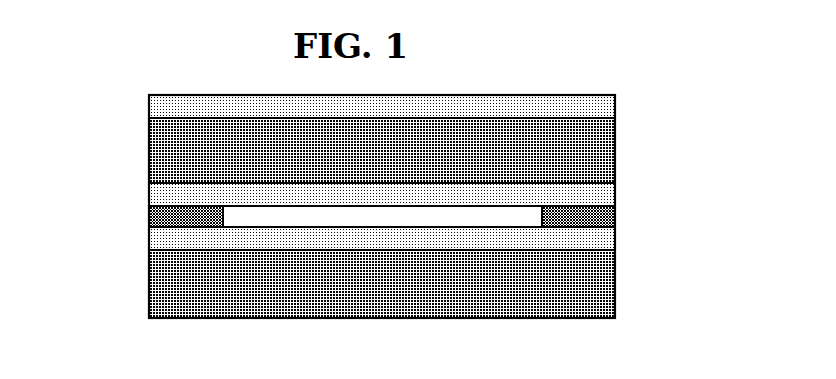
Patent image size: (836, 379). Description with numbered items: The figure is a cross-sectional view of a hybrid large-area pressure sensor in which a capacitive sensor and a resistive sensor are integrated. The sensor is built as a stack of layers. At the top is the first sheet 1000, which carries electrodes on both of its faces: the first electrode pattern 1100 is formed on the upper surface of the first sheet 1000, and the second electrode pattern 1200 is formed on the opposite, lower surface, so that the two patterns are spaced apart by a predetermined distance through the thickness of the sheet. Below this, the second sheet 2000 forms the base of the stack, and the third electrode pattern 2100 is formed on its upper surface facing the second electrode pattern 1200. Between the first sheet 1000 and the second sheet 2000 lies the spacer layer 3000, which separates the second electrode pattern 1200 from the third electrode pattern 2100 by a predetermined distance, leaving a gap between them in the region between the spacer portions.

The first sheet 1000 is at (384, 154).
The first electrode pattern 1100 is at (615, 106).
The second electrode pattern 1200 is at (615, 195).
The spacer layer 3000 is at (149, 221).
The second sheet 2000 is at (384, 272).
The third electrode pattern 2100 is at (615, 238).